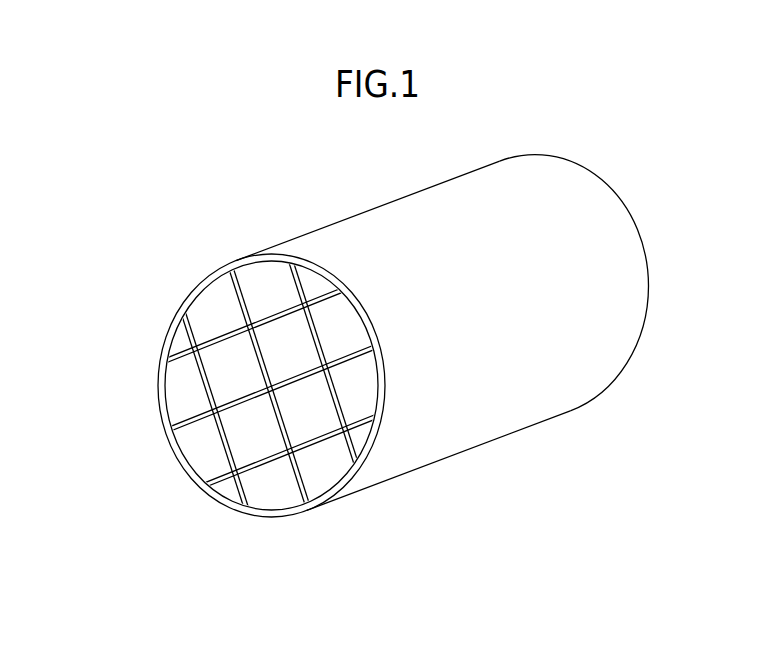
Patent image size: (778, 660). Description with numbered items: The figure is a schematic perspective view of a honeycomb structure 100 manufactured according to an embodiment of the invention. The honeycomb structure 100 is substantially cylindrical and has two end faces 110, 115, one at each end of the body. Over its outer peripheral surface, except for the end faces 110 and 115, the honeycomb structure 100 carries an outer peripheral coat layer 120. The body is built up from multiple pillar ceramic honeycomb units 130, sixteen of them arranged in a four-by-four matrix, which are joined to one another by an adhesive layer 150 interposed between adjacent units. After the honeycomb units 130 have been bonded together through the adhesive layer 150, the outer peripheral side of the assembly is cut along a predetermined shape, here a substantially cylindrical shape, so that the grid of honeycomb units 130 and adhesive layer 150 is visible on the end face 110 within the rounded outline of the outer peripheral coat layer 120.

The honeycomb structure 100 is at (162, 129).
The end face 110 is at (116, 365).
The end face 115 is at (637, 187).
The outer peripheral coat layer 120 is at (347, 243).
The honeycomb unit 130 is at (180, 332).
The adhesive layer 150 is at (364, 444).